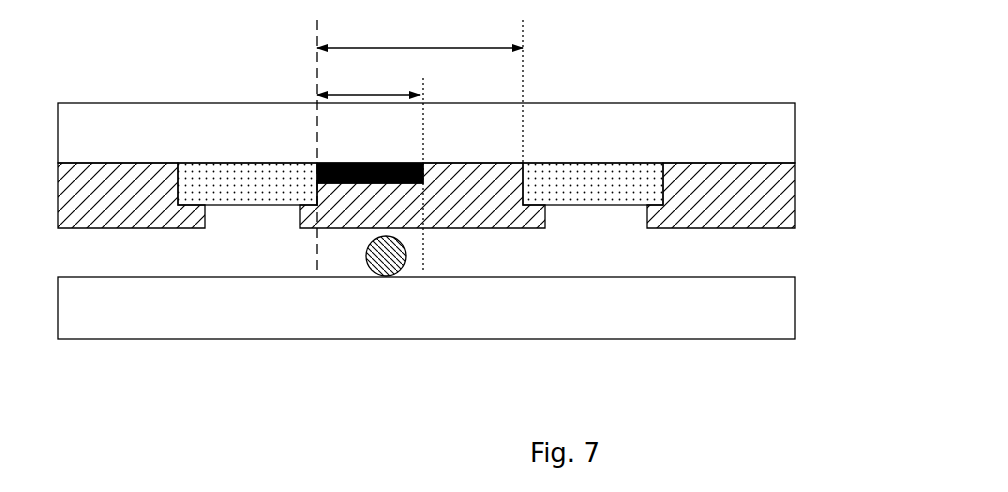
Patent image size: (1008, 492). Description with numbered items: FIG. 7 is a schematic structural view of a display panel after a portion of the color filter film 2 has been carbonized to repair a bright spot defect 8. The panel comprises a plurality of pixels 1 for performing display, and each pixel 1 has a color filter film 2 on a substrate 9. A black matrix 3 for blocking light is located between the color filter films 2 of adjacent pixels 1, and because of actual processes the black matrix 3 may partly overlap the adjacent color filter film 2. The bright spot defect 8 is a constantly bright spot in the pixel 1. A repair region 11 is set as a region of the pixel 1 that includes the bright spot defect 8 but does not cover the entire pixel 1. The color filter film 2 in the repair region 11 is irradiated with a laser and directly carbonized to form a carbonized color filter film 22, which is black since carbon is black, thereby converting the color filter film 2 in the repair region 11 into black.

The pixel 1 is at (420, 27).
The repair region 11 is at (368, 75).
The color filter film 2 is at (462, 283).
The carbonized color filter film 22 is at (345, 228).
The black matrix 3 is at (620, 183).
The bright spot defect 8 is at (407, 251).
The substrate 9 is at (773, 130).